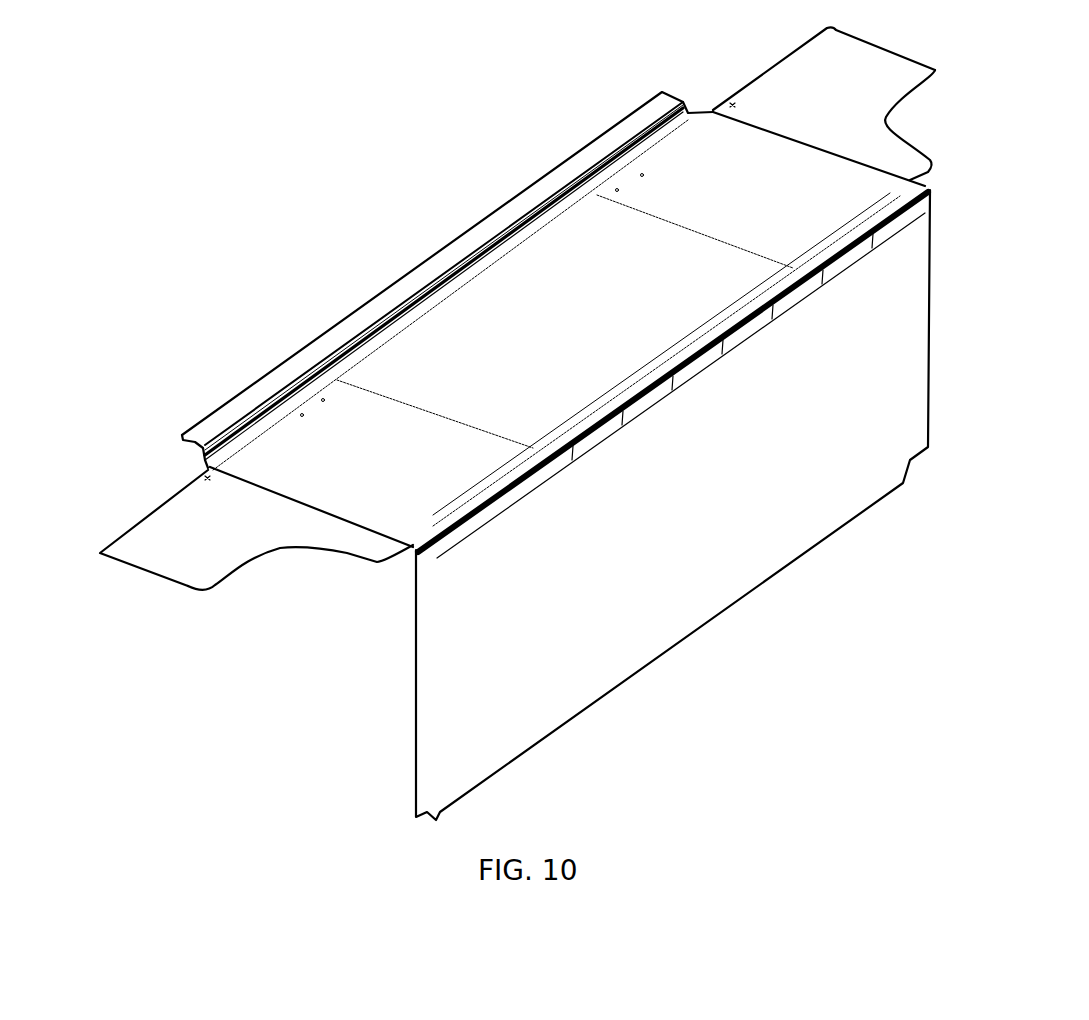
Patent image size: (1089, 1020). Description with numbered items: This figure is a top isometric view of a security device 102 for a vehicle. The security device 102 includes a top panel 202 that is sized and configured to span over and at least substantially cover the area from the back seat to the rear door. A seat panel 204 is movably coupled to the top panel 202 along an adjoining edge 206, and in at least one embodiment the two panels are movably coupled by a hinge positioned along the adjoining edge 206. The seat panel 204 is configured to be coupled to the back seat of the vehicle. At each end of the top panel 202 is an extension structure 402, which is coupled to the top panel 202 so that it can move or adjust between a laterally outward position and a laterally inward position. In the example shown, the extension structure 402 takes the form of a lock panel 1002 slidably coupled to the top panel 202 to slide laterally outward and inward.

The security device 102 is at (577, 423).
The top panel 202 is at (437, 335).
The seat panel 204 is at (628, 592).
The adjoining edge 206 is at (850, 253).
The extension structure 402 is at (178, 518).
The lock panel 1002 is at (180, 583).